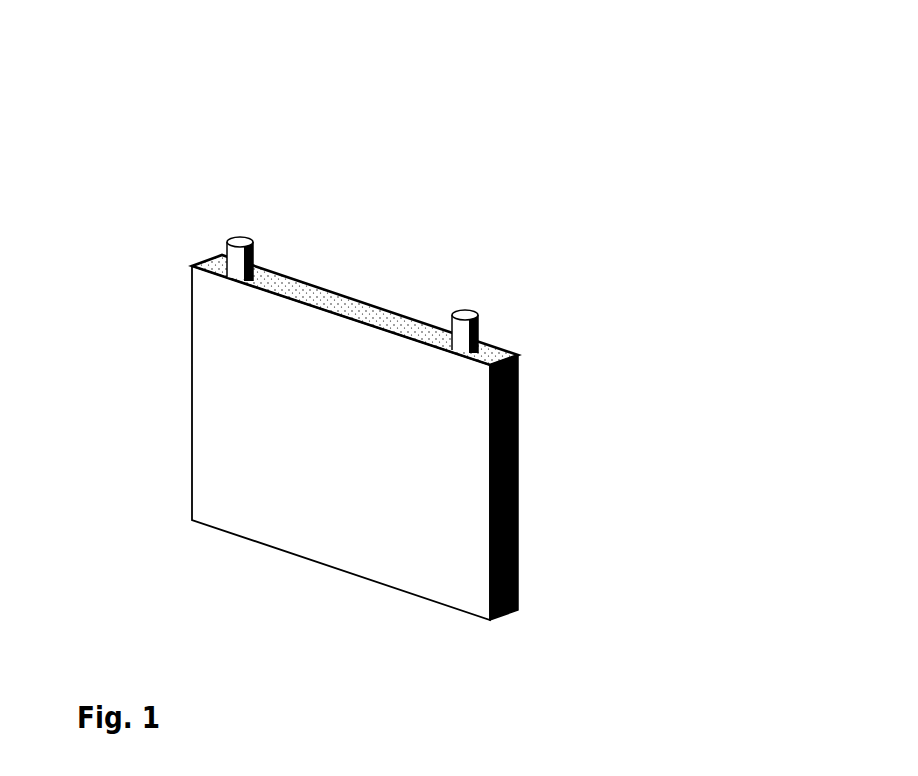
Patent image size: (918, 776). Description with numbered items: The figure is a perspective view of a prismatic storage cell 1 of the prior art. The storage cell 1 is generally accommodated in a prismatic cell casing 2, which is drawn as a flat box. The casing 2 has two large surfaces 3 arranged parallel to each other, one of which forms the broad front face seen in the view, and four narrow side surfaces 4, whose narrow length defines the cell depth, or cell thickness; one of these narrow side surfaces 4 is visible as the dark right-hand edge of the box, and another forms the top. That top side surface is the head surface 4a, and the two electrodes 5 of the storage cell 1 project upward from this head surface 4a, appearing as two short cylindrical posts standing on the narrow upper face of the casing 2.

The prismatic storage cell 1 is at (424, 327).
The prismatic cell casing 2 is at (183, 314).
The large surfaces 3 is at (298, 447).
The narrow side surfaces 4 is at (496, 350).
The head surface 4a is at (334, 300).
The electrodes 5 is at (242, 233).